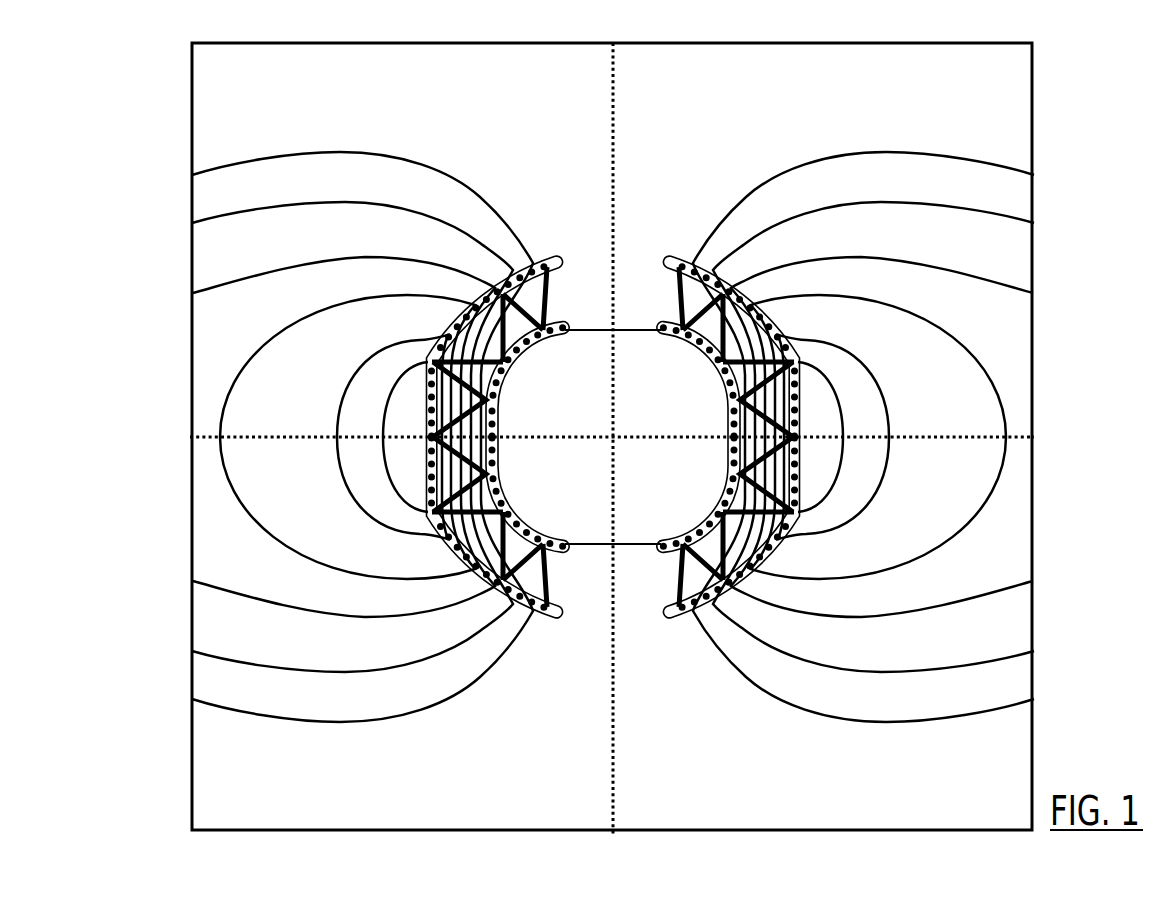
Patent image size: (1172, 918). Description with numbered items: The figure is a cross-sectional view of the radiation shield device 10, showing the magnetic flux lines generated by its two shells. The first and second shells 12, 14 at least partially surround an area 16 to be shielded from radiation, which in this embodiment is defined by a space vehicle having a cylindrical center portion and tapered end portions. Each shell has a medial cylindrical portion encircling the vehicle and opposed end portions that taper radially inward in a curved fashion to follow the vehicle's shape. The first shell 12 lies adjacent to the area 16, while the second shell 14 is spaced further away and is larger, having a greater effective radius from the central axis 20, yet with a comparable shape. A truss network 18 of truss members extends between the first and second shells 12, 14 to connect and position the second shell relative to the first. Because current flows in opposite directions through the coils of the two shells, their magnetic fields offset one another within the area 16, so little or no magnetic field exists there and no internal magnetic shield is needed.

The radiation shield device 10 is at (761, 128).
The first shell 12 is at (566, 323).
The second shell 14 is at (548, 258).
The area to be shielded 16 is at (629, 330).
The truss network 18 is at (680, 578).
The central axis 20 is at (612, 124).